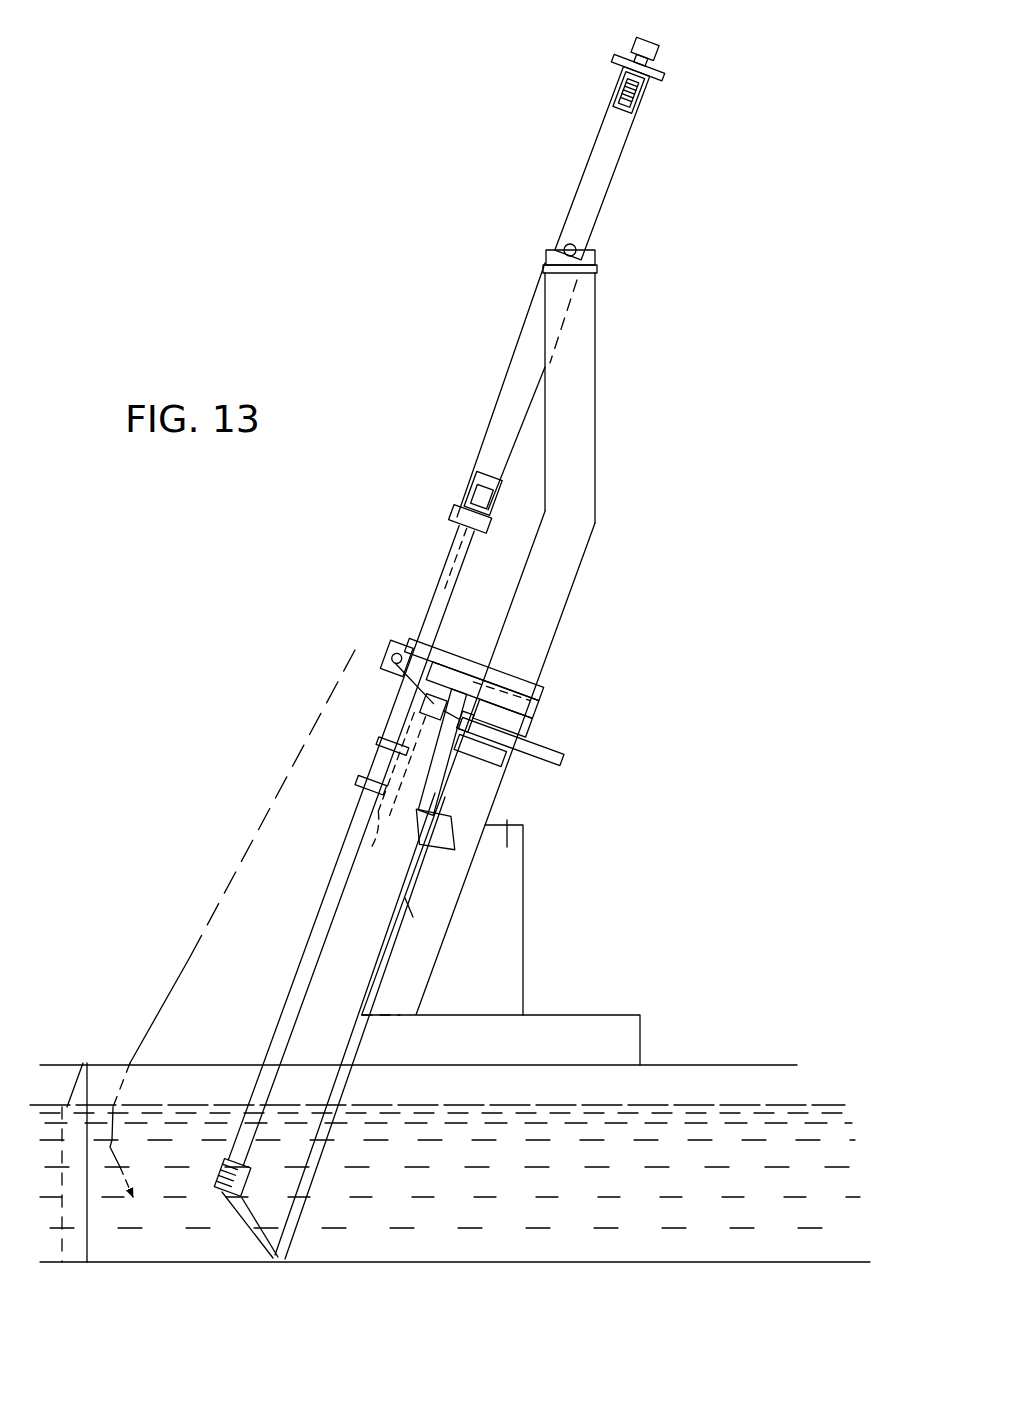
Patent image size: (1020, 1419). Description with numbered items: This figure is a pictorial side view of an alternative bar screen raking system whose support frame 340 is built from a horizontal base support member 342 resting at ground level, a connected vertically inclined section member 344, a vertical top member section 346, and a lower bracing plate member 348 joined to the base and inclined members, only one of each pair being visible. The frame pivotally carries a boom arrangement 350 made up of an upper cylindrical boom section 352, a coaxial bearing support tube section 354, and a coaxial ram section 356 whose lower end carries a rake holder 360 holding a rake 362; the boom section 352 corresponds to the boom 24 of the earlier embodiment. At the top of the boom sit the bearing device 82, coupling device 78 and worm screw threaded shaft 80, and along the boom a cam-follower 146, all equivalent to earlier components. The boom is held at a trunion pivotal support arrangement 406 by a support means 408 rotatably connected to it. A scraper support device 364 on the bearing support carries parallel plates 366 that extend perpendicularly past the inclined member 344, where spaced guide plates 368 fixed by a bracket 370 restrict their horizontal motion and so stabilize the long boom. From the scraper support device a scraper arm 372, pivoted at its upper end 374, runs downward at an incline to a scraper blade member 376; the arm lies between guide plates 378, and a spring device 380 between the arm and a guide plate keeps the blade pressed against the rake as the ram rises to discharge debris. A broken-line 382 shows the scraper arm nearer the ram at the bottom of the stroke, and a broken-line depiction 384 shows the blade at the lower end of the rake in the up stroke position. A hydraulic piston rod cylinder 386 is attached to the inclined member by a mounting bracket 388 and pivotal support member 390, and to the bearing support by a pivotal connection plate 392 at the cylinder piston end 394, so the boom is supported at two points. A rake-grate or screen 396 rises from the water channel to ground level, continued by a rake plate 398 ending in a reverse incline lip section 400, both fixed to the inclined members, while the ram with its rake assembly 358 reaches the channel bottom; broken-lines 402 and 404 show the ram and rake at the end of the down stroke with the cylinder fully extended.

The upper cylindrical boom section 24 is at (510, 357).
The coupling device 78 is at (657, 53).
The worm screw threaded shaft 80 is at (633, 97).
The bearing device 82 is at (632, 50).
The cam-follower 146 is at (467, 497).
The support frame 340 is at (562, 804).
The horizontal base support member 342 is at (630, 1014).
The vertically inclined section member 344 is at (516, 590).
The vertical top member section 346 is at (593, 393).
The lower bracing plate member 348 is at (523, 910).
The boom arrangement 350 is at (415, 573).
The upper cylindrical boom section 352 is at (592, 147).
The coaxial bearing support tube section 354 is at (432, 615).
The coaxial ram section 356 is at (477, 537).
The rake assembly 358 is at (215, 1178).
The rake holder 360 is at (228, 1164).
The rake 362 is at (250, 1197).
The scraper support device 364 is at (403, 650).
The parallel plate 366 is at (550, 692).
The guide plate 368 is at (481, 648).
The bracket 370 is at (535, 675).
The scraper arm 372 is at (430, 765).
The upper end 374 is at (400, 670).
The scraper blade member 376 is at (432, 855).
The guide plate 378 is at (503, 808).
The spring device 380 is at (375, 785).
The broken-line of scraper arm arrangement 382 is at (362, 832).
The broken-line depiction of blade 384 is at (360, 810).
The hydraulic piston rod cylinder 386 is at (550, 745).
The mounting bracket 388 is at (495, 770).
The pivotal support member 390 is at (492, 724).
The pivotal connection plate 392 is at (425, 705).
The cylinder piston end 394 is at (395, 748).
The rake-grate or screen 396 is at (323, 1153).
The rake plate 398 is at (365, 998).
The reverse incline lip section 400 is at (407, 900).
The broken-line 402 is at (123, 1150).
The broken-line 404 is at (185, 964).
The trunion pivotal support arrangement 406 is at (548, 247).
The support means 408 is at (578, 250).